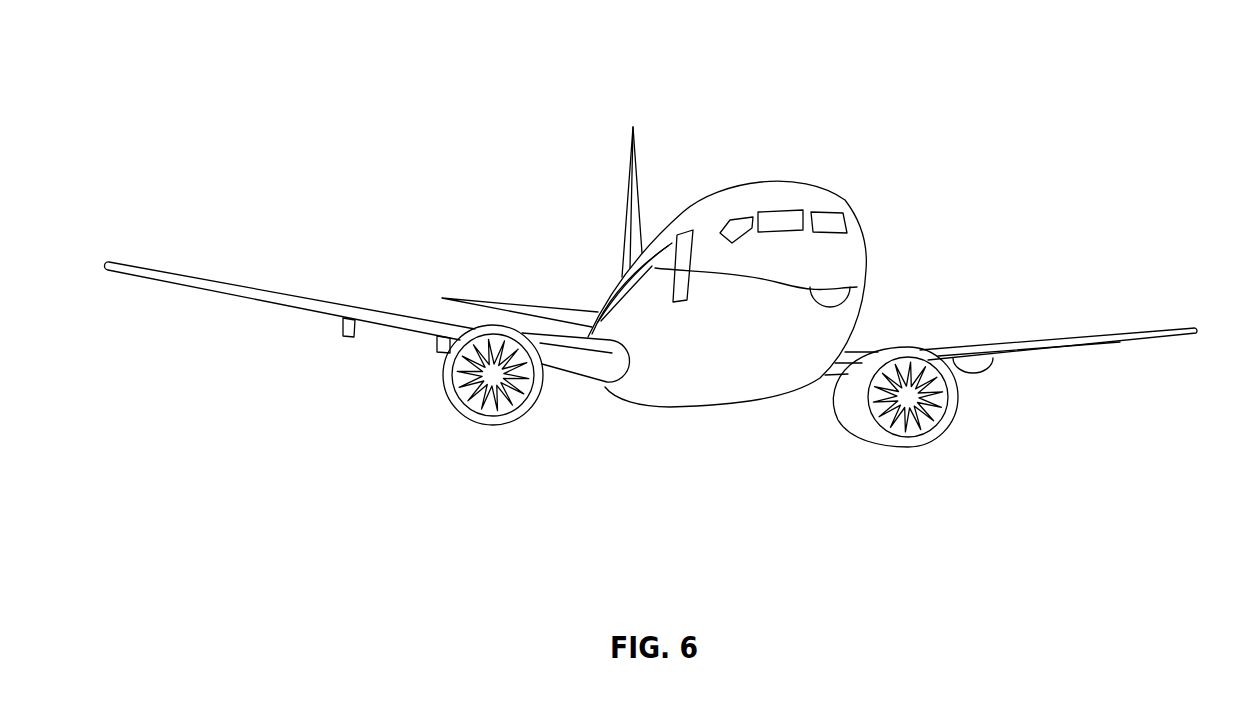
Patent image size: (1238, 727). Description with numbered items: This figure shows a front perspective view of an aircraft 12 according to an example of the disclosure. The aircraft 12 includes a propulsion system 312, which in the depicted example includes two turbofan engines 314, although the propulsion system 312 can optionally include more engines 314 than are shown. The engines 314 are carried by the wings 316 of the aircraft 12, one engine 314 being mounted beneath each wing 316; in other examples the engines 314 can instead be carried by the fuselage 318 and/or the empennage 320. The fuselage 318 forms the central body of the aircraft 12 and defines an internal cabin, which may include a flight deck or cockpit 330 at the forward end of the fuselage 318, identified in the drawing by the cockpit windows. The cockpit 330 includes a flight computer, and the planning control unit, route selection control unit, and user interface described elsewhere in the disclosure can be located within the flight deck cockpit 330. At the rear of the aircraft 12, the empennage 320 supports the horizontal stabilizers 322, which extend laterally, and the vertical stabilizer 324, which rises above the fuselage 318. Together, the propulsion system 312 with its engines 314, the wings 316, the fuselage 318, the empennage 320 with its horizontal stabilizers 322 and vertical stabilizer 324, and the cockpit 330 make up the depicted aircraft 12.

The aircraft 12 is at (378, 66).
The propulsion system 312 is at (1004, 437).
The turbofan engines 314 is at (487, 425).
The wings 316 is at (253, 290).
The fuselage 318 is at (865, 248).
The empennage 320 is at (610, 290).
The horizontal stabilizers 322 is at (482, 303).
The vertical stabilizer 324 is at (632, 170).
The flight deck or cockpit 330 is at (825, 223).